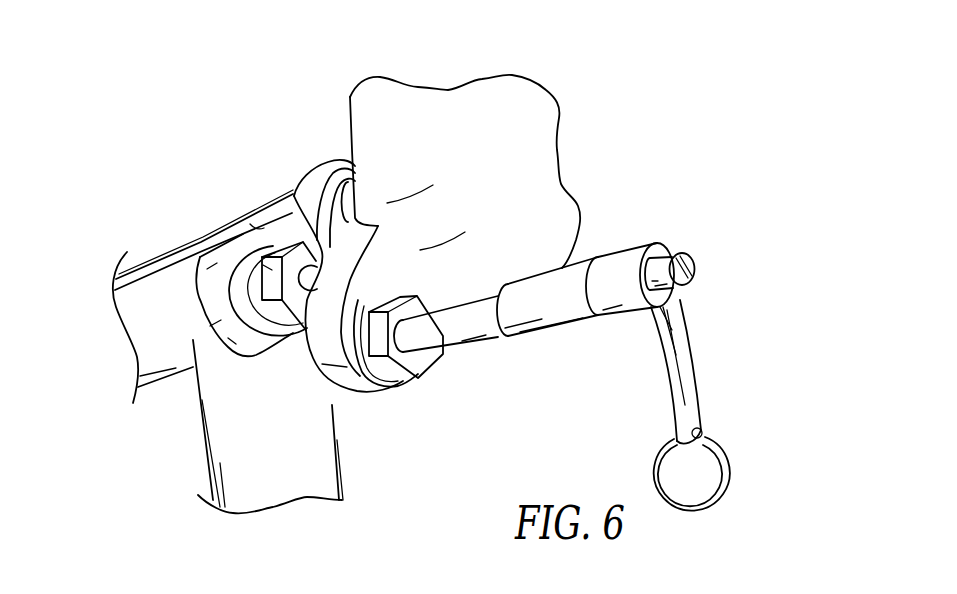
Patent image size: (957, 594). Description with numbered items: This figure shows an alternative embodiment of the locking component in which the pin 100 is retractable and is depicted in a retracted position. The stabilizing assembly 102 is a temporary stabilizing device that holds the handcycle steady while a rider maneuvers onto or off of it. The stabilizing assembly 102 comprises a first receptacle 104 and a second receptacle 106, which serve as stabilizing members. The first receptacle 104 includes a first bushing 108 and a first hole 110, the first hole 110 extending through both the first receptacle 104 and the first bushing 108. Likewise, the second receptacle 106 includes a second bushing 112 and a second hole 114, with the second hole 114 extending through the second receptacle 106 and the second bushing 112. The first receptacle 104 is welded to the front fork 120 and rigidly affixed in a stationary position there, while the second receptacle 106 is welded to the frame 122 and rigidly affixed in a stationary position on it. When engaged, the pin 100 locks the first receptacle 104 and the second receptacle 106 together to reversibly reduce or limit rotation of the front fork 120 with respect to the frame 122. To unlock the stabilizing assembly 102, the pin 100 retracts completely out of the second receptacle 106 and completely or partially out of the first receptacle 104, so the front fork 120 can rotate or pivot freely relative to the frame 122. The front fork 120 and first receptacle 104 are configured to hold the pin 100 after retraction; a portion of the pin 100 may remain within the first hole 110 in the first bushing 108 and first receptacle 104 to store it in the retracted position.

The pin 100 is at (735, 291).
The stabilizing assembly 102 is at (174, 137).
The first receptacle 104 is at (343, 380).
The second receptacle 106 is at (210, 295).
The first bushing 108 is at (418, 368).
The first hole 110 is at (440, 363).
The second bushing 112 is at (253, 257).
The second hole 114 is at (312, 265).
The front fork 120 is at (365, 108).
The frame 122 is at (130, 308).